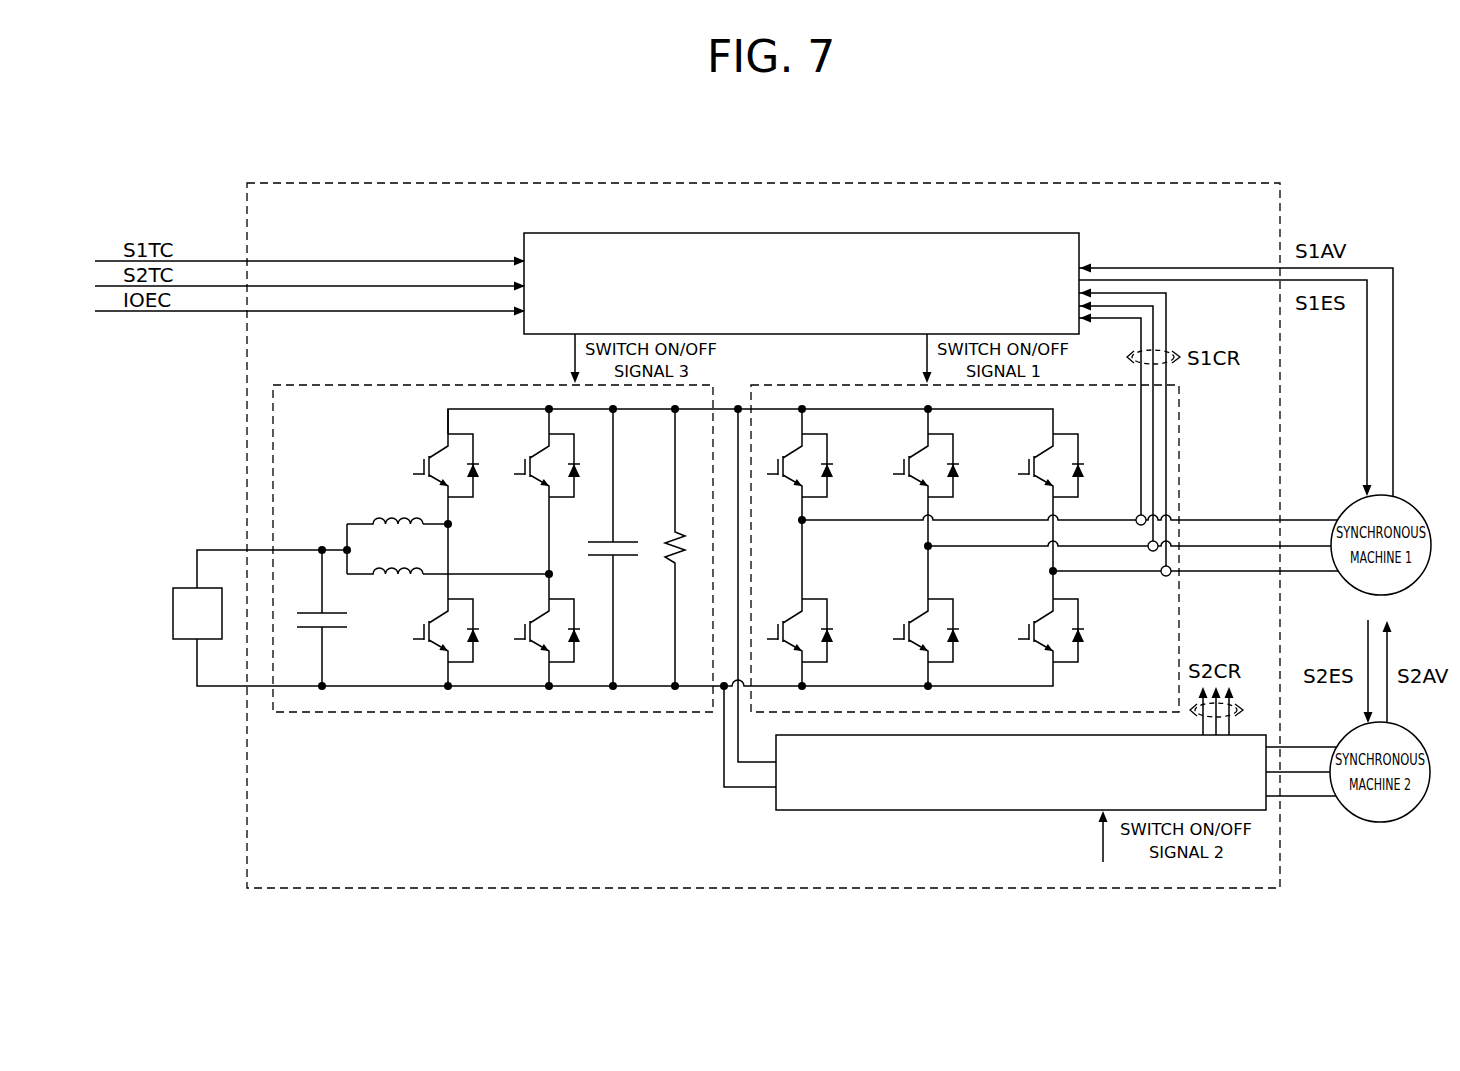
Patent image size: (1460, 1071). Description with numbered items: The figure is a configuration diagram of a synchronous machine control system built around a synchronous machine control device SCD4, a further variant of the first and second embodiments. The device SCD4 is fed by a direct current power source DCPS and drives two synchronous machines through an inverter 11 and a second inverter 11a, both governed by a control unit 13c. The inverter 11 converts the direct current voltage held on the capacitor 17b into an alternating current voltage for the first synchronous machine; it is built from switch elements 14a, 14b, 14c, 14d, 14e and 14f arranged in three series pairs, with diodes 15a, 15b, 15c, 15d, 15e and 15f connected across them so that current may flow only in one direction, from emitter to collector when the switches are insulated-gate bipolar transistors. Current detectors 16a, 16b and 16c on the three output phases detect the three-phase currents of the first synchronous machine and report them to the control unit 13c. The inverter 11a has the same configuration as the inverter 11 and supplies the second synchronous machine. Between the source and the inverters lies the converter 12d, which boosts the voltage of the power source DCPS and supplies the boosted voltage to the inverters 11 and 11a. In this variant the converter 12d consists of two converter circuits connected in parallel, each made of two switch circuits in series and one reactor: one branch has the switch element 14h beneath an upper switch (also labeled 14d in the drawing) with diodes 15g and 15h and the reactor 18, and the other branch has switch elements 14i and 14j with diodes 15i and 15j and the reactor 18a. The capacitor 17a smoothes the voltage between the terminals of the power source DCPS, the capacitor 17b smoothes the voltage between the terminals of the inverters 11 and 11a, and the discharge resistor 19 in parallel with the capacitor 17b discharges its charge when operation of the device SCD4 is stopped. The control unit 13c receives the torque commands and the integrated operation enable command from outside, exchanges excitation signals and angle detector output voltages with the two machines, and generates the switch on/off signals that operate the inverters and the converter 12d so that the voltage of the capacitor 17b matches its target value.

The synchronous machine control device SCD4 is at (295, 162).
The control unit 13c is at (532, 233).
The boost converter circuit 12d is at (408, 385).
The inverter 11 is at (752, 385).
The inverter 11a is at (800, 812).
The switch element 14a is at (792, 450).
The switch element 14b is at (792, 615).
The switch element 14c is at (918, 450).
The switch element 14d is at (438, 450).
The switch element 14e is at (1043, 450).
The switch element 14f is at (1043, 615).
The switch element 14h is at (438, 615).
The switching element 14i is at (539, 450).
The switching element 14j is at (539, 615).
The diode 15a is at (831, 480).
The diode 15b is at (831, 645).
The diode 15c is at (957, 480).
The diode 15d is at (957, 645).
The diode 15e is at (1082, 480).
The diode 15f is at (1082, 645).
The diode 15g is at (477, 480).
The diode 15h is at (477, 645).
The diode 15i is at (578, 480).
The diode 15j is at (578, 645).
The current detector 16a is at (1134, 526).
The current detector 16b is at (1146, 552).
The current detector 16c is at (1160, 578).
The C1 capacitor 17a is at (308, 613).
The C2 capacitor 17b is at (618, 560).
The reactor 18 is at (388, 520).
The reactor 18a is at (388, 570).
The discharge resistor 19 is at (666, 536).
The direct current power source DCPS is at (190, 586).